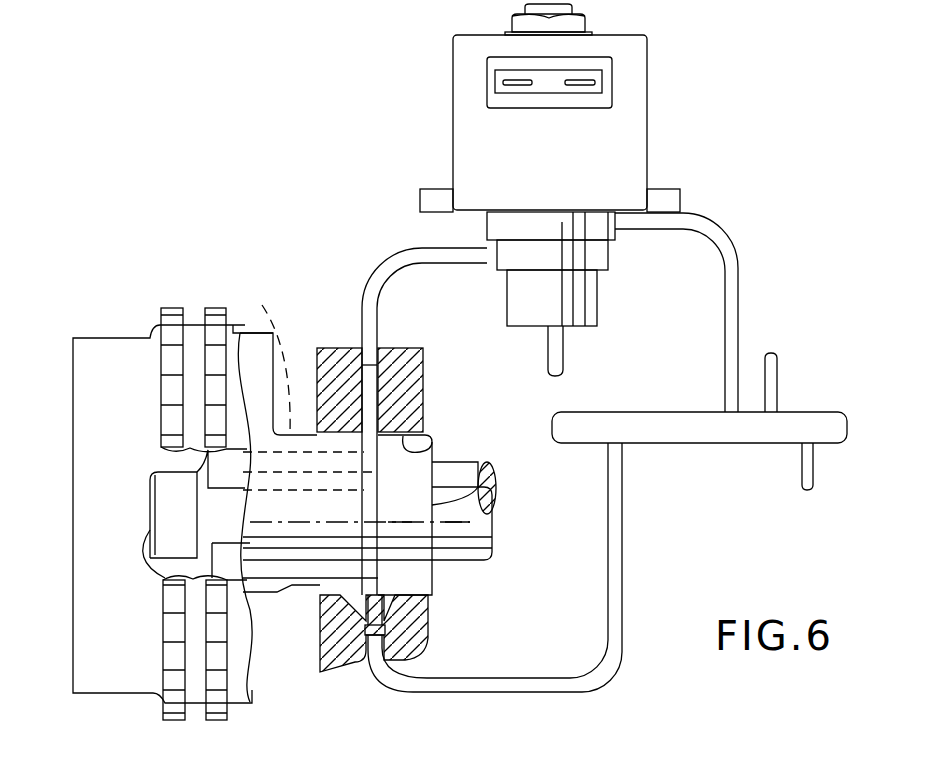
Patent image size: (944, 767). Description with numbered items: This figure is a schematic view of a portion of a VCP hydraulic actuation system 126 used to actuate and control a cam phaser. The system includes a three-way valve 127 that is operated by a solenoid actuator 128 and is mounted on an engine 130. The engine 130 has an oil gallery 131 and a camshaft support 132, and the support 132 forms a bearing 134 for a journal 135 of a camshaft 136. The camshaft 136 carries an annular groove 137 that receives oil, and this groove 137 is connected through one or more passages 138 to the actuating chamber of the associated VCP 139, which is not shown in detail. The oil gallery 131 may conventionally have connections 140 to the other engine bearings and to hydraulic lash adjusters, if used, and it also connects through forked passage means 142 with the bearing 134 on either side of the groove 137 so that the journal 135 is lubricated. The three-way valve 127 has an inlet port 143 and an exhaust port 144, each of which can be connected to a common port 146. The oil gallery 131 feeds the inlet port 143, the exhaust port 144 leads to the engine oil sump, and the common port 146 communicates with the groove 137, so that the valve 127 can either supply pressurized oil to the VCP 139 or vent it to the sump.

The VCP hydraulic actuation system 126 is at (731, 200).
The three-way valve 127 is at (612, 262).
The solenoid actuator 128 is at (620, 155).
The engine 130 is at (222, 300).
The oil gallery 131 is at (663, 445).
The camshaft support 132 is at (350, 348).
The bearing 134 is at (432, 452).
The journal 135 is at (433, 567).
The camshaft 136 is at (466, 563).
The annular groove 137 is at (375, 507).
The passages 138 is at (270, 320).
The VCP 139 is at (130, 365).
The connections 140 is at (780, 382).
The forked passage means 142 is at (623, 605).
The inlet port 143 is at (615, 232).
The exhaust port 144 is at (550, 345).
The common port 146 is at (490, 265).